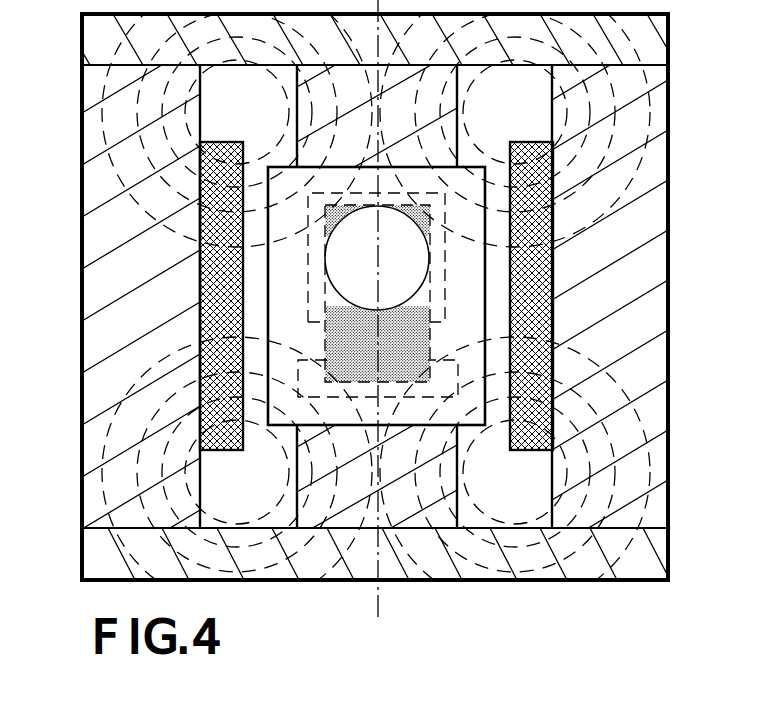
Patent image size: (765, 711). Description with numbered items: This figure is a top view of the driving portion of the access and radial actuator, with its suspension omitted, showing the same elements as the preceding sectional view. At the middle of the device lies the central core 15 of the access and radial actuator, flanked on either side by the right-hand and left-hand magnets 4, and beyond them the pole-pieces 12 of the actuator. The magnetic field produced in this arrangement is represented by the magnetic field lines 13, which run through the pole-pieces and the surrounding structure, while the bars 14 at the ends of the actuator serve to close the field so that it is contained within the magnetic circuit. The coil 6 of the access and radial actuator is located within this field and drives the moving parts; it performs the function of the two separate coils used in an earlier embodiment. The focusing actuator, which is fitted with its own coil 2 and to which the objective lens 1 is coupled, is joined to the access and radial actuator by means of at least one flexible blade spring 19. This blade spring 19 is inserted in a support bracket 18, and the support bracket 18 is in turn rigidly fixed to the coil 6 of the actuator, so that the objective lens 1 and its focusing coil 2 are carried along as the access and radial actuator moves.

The objective lens 1 is at (413, 273).
The coil 2 is at (313, 291).
The magnets 4 is at (210, 144).
The coil 6 is at (484, 415).
The pole-pieces 12 is at (86, 297).
The magnetic field lines 13 is at (668, 118).
The bars 14 is at (83, 44).
The central core 15 is at (366, 584).
The support bracket 18 is at (294, 408).
The flexible blade spring 19 is at (425, 343).